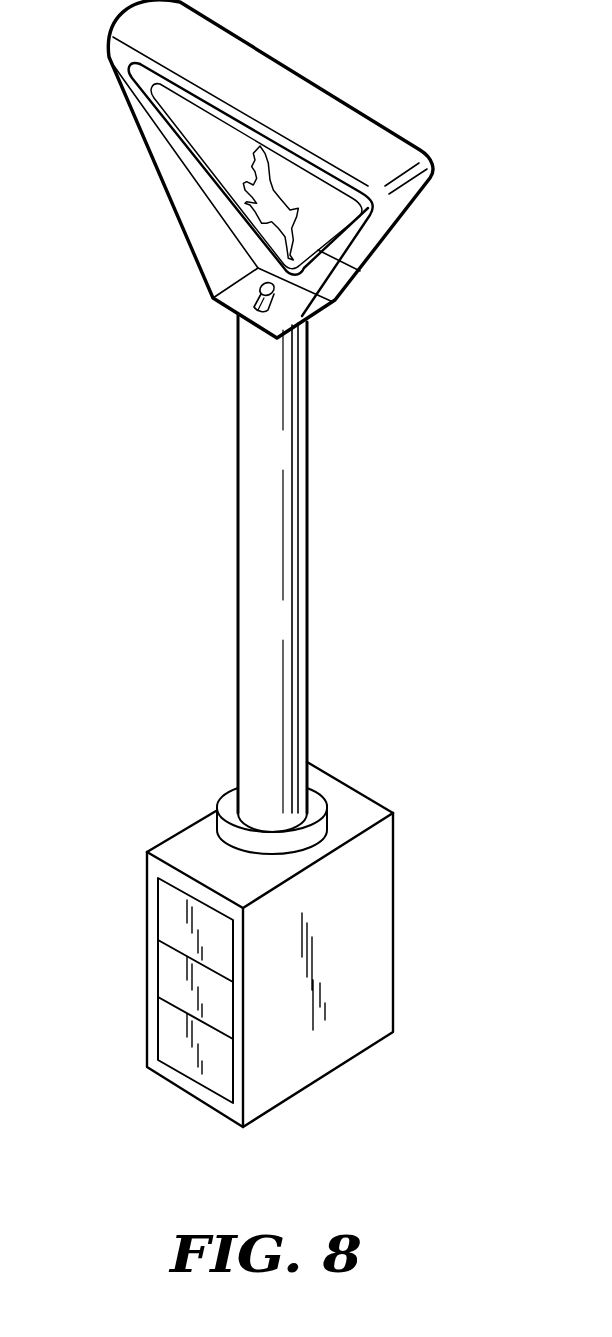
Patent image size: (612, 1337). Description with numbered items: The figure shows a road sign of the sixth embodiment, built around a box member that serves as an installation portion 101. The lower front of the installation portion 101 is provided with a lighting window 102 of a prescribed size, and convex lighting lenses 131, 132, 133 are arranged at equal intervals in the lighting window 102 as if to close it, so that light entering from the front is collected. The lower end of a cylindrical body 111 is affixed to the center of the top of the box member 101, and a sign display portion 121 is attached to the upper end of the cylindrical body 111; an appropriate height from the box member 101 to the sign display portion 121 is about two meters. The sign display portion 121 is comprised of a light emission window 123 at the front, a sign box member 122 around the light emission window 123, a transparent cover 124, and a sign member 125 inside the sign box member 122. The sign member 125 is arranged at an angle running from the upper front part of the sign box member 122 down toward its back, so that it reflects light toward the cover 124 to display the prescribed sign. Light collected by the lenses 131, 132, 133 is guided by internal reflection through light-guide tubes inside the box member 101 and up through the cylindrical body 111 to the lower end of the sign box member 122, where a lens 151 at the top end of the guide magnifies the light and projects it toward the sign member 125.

The installation portion 101 is at (374, 1004).
The lighting window 102 is at (230, 1080).
The cylindrical body 111 is at (278, 544).
The sign display portion 121 is at (376, 119).
The sign box member 122 is at (380, 217).
The light emission window 123 is at (187, 203).
The transparent cover 124 is at (160, 150).
The sign member 125 is at (302, 183).
The convex lighting lens 131 is at (165, 1043).
The convex lighting lens 132 is at (166, 972).
The convex lighting lens 133 is at (166, 909).
The lens 151 is at (243, 308).